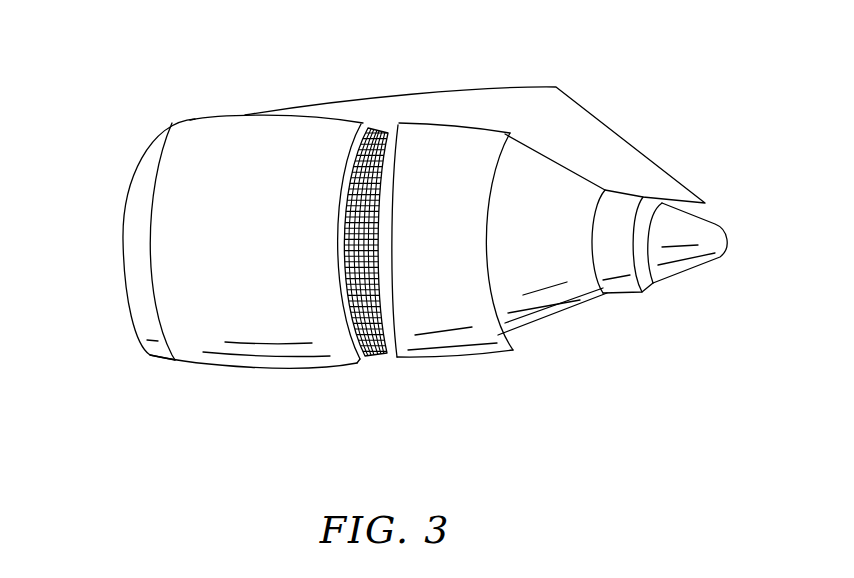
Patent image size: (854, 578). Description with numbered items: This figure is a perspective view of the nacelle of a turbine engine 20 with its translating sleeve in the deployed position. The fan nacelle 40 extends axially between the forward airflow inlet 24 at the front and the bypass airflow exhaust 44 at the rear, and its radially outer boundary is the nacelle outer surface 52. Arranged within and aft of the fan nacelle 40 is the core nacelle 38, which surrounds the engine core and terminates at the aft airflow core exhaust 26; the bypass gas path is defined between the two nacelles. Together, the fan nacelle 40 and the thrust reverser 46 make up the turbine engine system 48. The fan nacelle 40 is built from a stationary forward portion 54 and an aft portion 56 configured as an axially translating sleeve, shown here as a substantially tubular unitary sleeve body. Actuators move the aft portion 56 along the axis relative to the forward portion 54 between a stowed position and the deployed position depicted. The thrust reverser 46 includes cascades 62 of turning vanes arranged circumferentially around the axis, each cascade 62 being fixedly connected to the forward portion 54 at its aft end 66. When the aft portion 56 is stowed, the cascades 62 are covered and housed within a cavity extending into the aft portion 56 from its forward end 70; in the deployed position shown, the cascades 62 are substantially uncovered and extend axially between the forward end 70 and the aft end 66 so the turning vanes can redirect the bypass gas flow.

The turbine engine 20 is at (98, 80).
The forward airflow inlet 24 is at (125, 307).
The aft airflow core exhaust 26 is at (660, 283).
The core nacelle 38 is at (576, 316).
The fan nacelle 40 is at (210, 117).
The bypass airflow exhaust 44 is at (530, 324).
The thrust reverser 46 is at (388, 130).
The turbine engine system 48 is at (366, 382).
The nacelle outer surface 52 is at (215, 340).
The stationary forward portion 54 is at (296, 357).
The aft portion 56 is at (459, 347).
The cascade 62 is at (338, 204).
The aft end 66 is at (377, 362).
The forward end 70 is at (402, 362).